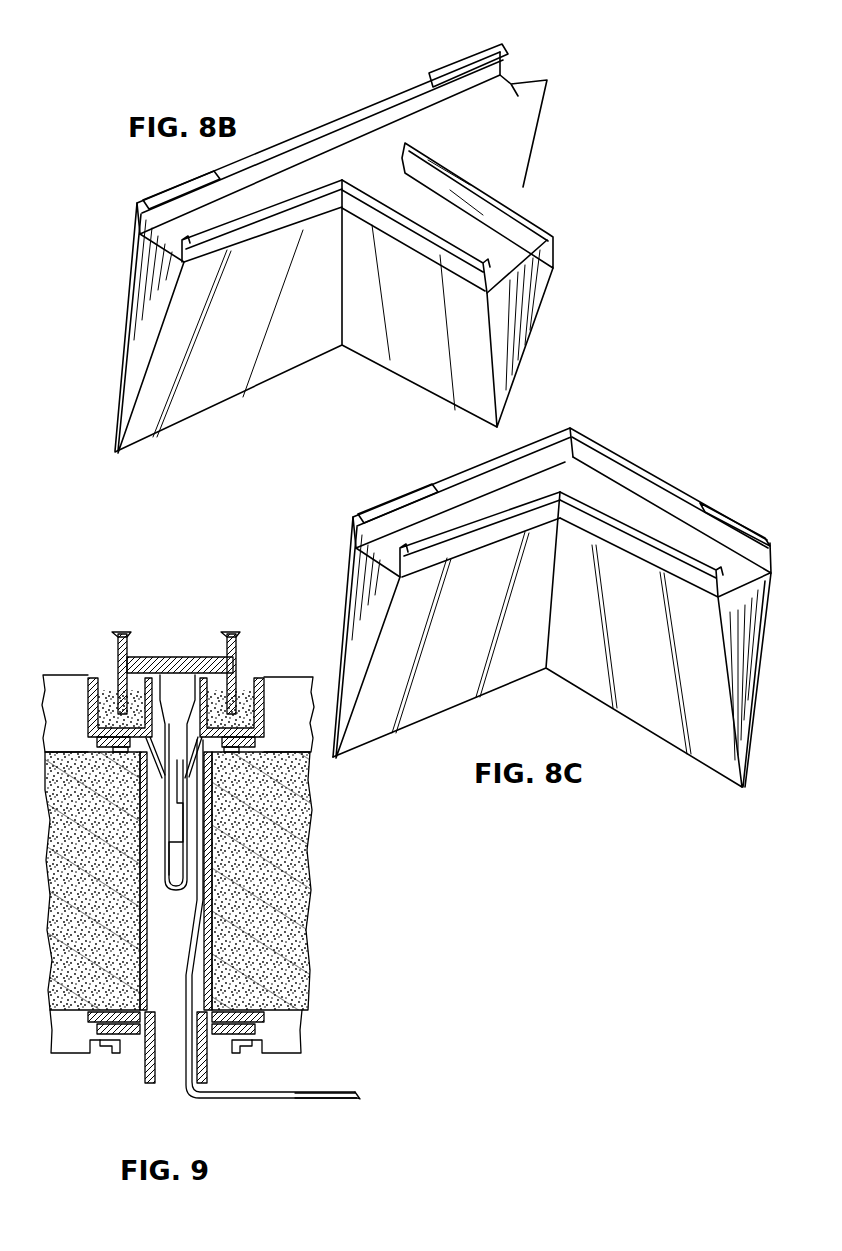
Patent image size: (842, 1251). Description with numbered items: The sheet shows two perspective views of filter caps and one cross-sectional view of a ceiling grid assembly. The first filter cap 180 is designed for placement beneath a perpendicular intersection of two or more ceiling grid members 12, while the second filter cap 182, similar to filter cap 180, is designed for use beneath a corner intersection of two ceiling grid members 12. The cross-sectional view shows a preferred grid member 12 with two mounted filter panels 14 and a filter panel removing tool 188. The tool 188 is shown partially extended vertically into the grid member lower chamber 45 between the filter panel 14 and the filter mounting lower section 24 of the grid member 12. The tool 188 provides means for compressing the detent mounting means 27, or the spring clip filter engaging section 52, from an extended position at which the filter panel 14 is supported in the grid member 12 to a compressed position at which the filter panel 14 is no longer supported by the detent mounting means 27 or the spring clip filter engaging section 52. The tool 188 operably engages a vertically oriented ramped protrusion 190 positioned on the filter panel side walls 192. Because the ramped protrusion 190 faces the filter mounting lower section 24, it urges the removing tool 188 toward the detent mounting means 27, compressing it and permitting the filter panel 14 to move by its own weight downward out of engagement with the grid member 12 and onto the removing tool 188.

In FIG. 8B, the filter cap 180 is at (130, 263).
In FIG. 8C, the filter cap 182 is at (618, 453).
In FIG. 9, the grid member 12 is at (231, 667).
In FIG. 9, the filter panel 14 is at (76, 725).
In FIG. 9, the filter mounting lower section 24 is at (177, 687).
In FIG. 9, the detent mounting means 27 is at (206, 771).
In FIG. 9, the grid member lower chamber 45 is at (178, 941).
In FIG. 9, the spring clip filter engaging section 52 is at (160, 763).
In FIG. 9, the filter panel removing tool 188 is at (297, 1093).
In FIG. 9, the ramped protrusion 190 is at (211, 790).
In FIG. 9, the side wall 192 is at (214, 834).